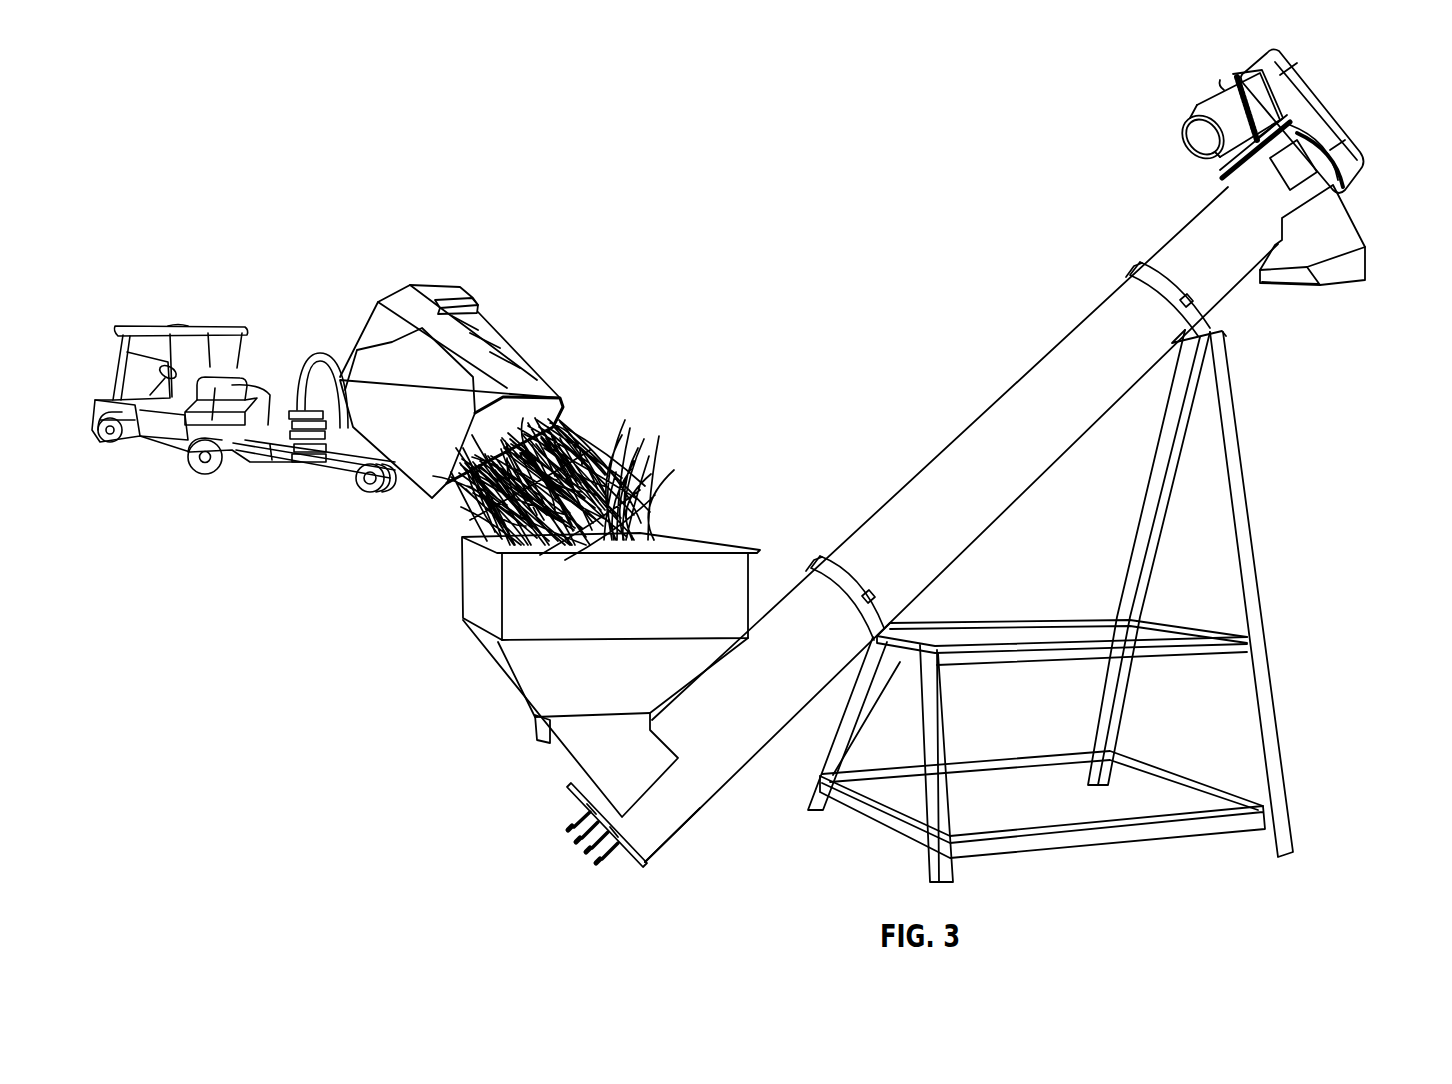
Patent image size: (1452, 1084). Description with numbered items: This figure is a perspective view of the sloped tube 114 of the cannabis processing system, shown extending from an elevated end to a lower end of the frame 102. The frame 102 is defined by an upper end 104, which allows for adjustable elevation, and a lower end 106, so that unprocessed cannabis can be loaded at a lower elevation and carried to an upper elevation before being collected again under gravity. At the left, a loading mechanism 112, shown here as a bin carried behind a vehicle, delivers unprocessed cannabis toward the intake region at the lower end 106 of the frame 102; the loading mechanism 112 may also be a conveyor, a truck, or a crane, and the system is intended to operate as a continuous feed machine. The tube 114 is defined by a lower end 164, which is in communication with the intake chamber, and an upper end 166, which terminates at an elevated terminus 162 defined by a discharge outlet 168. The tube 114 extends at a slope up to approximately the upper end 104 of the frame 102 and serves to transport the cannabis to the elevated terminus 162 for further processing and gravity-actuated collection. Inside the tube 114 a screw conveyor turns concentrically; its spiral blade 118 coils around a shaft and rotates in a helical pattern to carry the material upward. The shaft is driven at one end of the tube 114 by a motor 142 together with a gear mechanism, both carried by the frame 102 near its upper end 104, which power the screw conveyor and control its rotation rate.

The frame 102 is at (1074, 606).
The upper end 104 is at (1229, 393).
The lower end 106 is at (1112, 845).
The loading mechanism 112 is at (522, 383).
The tube 114 is at (922, 523).
The spiral blade 118 is at (496, 650).
The motor 142 is at (1211, 105).
The elevated terminus 162 is at (1346, 270).
The lower end 164 is at (677, 822).
The upper end 166 is at (1206, 208).
The discharge outlet 168 is at (1306, 289).